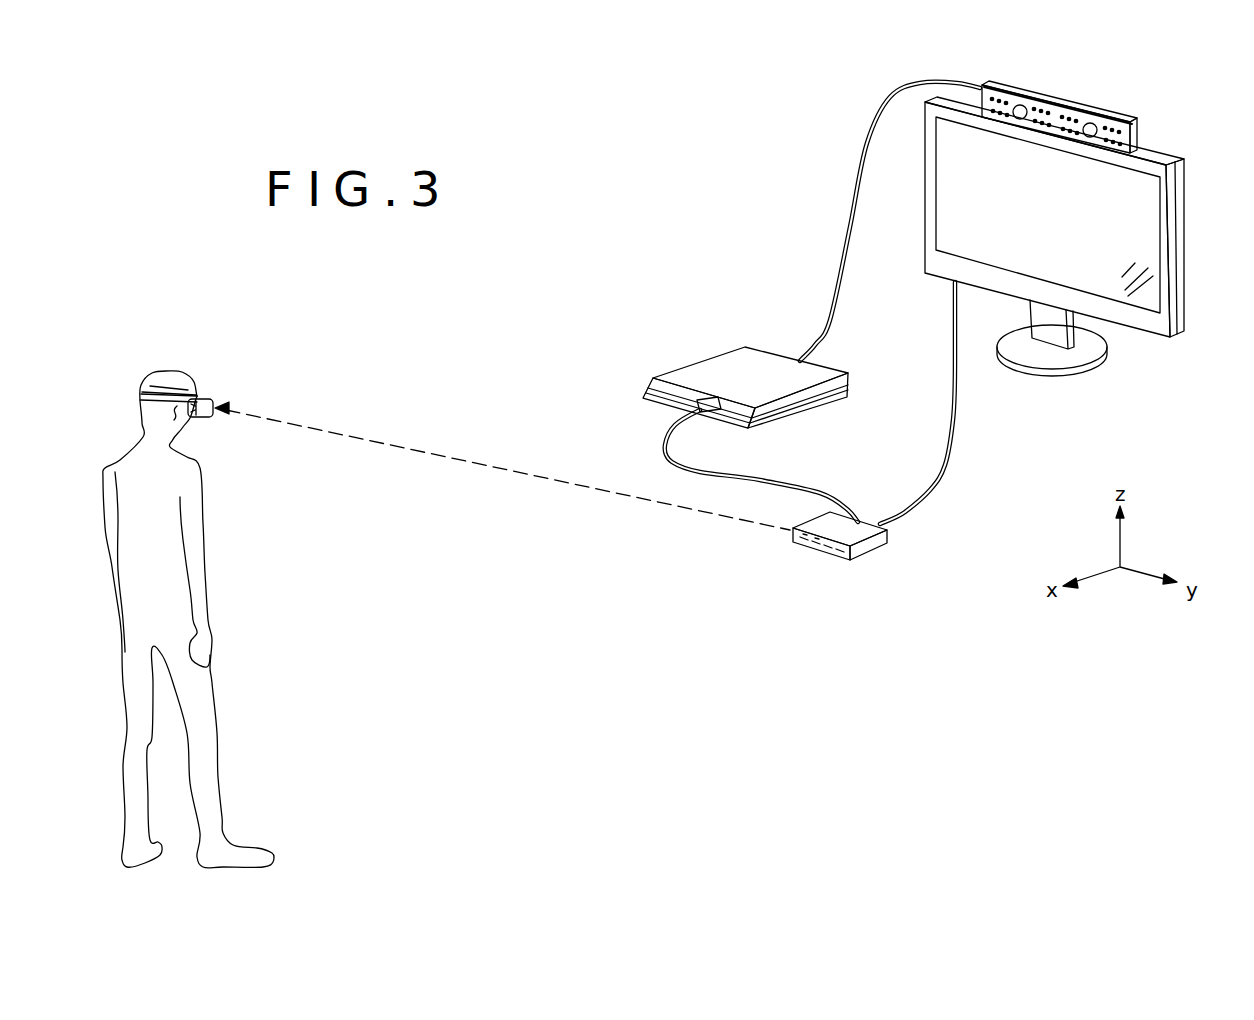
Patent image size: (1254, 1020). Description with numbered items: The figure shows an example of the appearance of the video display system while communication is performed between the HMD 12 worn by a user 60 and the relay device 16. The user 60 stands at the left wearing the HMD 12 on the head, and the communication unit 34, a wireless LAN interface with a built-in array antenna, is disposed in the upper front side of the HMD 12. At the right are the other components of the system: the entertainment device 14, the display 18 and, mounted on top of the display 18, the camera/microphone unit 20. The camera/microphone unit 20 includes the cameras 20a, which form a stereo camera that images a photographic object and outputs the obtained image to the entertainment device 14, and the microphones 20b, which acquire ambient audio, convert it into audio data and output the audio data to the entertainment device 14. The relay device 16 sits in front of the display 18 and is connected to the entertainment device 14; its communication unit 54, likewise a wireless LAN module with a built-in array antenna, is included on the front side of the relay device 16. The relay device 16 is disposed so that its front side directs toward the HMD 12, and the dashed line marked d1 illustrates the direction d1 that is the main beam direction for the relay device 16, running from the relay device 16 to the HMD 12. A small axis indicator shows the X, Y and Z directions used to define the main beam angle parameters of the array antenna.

The HMD 12 is at (199, 419).
The entertainment device 14 is at (700, 361).
The relay device 16 is at (889, 532).
The display 18 is at (1186, 245).
The camera/microphone unit 20 is at (1138, 133).
The cameras 20a is at (1020, 120).
The microphones 20b is at (1050, 103).
The communication unit 34 is at (203, 397).
The communication unit 54 is at (845, 557).
The user 60 is at (220, 757).
The direction d1 is at (363, 436).